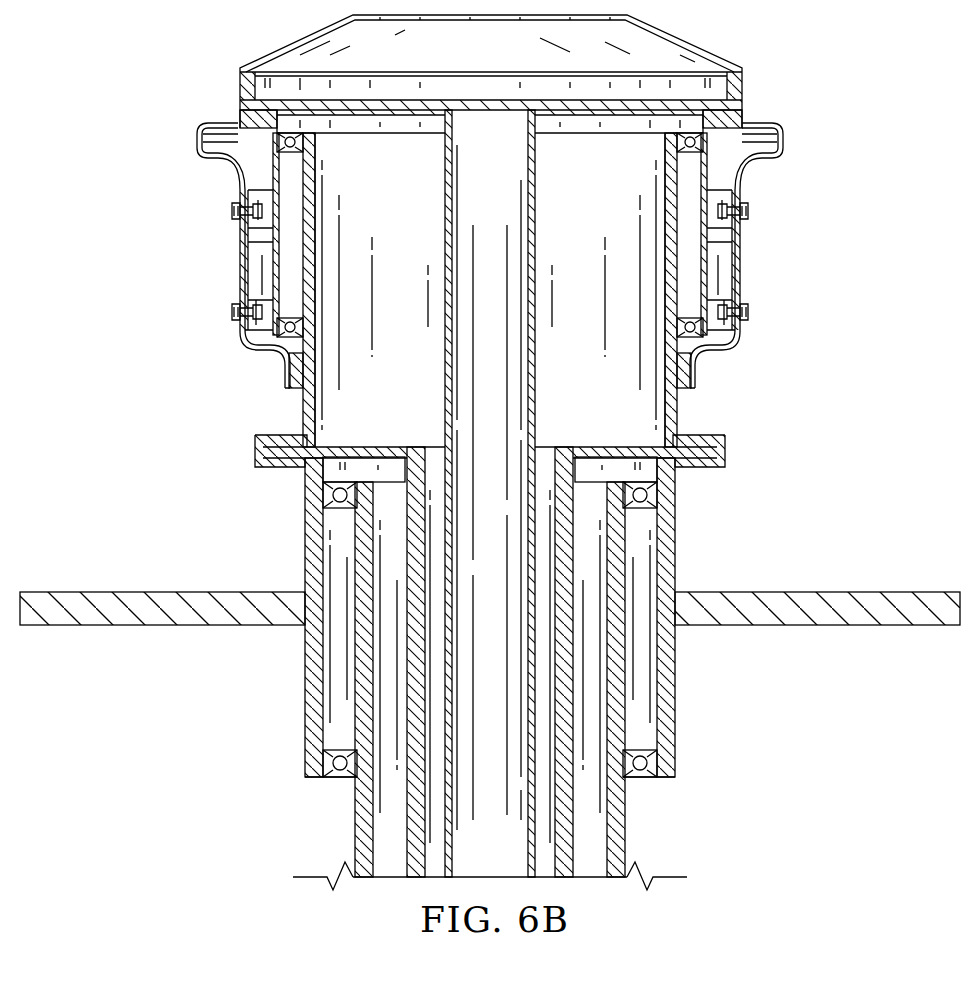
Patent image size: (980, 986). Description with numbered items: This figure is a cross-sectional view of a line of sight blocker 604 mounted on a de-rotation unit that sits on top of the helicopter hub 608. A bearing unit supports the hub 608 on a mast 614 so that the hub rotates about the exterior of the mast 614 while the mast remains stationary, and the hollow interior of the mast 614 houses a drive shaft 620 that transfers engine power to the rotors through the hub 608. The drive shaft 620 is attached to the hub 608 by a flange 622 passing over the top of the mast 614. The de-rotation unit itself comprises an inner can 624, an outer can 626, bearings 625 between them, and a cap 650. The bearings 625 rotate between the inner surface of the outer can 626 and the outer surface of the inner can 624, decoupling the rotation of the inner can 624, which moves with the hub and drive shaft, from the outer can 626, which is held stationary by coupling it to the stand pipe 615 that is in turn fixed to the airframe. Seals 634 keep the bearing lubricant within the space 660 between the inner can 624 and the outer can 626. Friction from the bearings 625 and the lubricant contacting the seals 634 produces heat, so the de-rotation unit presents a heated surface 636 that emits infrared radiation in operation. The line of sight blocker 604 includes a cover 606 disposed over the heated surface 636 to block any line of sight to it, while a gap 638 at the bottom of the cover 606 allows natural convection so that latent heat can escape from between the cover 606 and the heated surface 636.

The line of sight blocker 604 is at (241, 262).
The cover 606 is at (703, 276).
The hub 608 is at (122, 628).
The mast 614 is at (626, 815).
The stand pipe 615 is at (444, 410).
The drive shaft 620 is at (400, 850).
The flange 622 is at (726, 452).
The inner can 624 is at (300, 404).
The bearings 625 is at (268, 138).
The outer can 626 is at (708, 170).
The seals 634 is at (698, 364).
The heated surface 636 is at (254, 277).
The gap 638 is at (690, 386).
The cap 650 is at (241, 88).
The space 660 is at (700, 256).